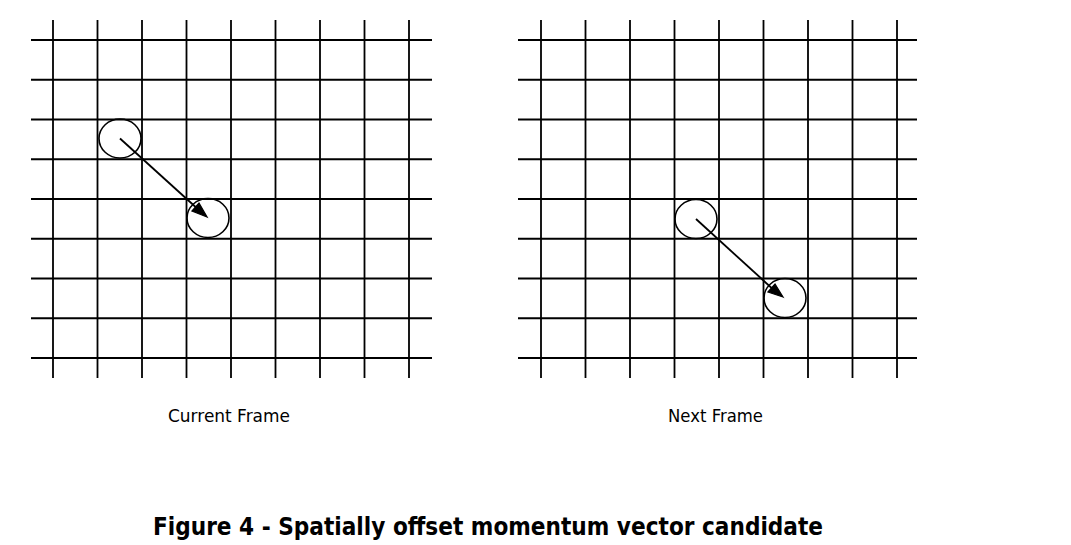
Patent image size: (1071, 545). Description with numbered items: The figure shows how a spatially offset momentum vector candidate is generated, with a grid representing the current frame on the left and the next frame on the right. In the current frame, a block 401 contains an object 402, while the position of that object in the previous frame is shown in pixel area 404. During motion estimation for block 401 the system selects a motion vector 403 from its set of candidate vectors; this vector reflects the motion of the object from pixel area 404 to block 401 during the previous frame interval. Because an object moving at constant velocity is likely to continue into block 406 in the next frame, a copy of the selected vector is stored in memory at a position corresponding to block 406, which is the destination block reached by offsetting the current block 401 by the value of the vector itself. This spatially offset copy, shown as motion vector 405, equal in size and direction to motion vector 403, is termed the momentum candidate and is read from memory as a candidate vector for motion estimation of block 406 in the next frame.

The block 401 is at (224, 198).
The object 402 is at (223, 218).
The motion vector 403 is at (162, 176).
The pixel area 404 is at (135, 118).
The motion vector 405 is at (736, 253).
The block 406 is at (765, 305).